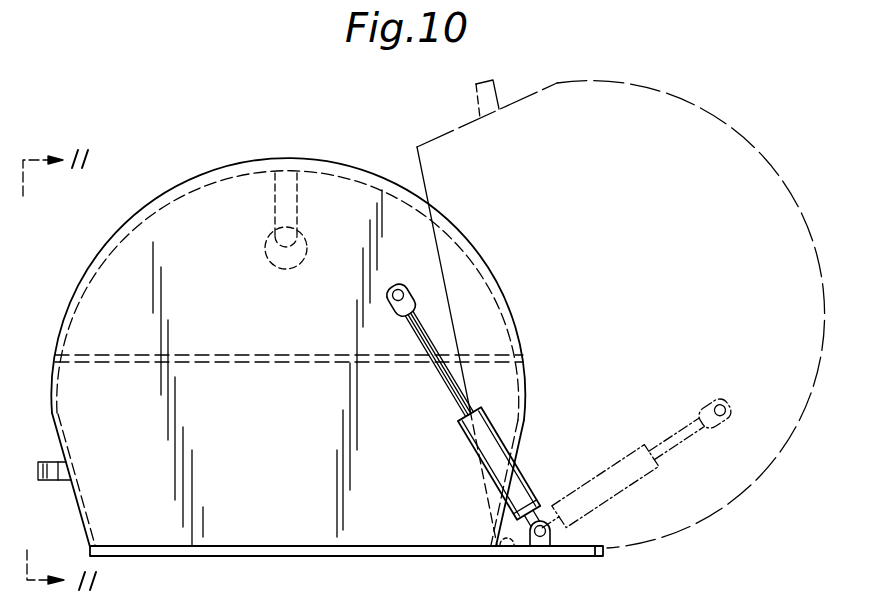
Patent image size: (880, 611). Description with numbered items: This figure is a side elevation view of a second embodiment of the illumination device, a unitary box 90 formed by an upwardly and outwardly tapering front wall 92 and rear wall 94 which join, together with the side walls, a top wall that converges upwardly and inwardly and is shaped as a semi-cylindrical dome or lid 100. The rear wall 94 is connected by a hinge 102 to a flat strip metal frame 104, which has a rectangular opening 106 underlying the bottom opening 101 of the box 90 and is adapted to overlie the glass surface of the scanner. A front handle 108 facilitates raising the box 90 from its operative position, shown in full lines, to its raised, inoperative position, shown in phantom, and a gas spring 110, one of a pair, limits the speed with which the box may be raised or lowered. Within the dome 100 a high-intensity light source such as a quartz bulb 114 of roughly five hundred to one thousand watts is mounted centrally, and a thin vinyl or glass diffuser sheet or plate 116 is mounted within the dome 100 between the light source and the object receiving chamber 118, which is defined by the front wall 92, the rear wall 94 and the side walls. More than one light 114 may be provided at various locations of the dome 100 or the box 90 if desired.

The unitary box 90 is at (273, 352).
The front wall 92 is at (81, 521).
The rear wall 94 is at (526, 416).
The dome or lid 100 is at (176, 198).
The bottom opening 101 is at (110, 557).
The hinge 102 is at (519, 546).
The flat strip metal frame 104 is at (593, 560).
The rectangular opening 106 is at (483, 551).
The front handle 108 is at (48, 482).
The gas spring 110 is at (613, 463).
The quartz bulb 114 is at (265, 249).
The diffuser sheet or plate 116 is at (206, 355).
The object receiving chamber 118 is at (300, 503).